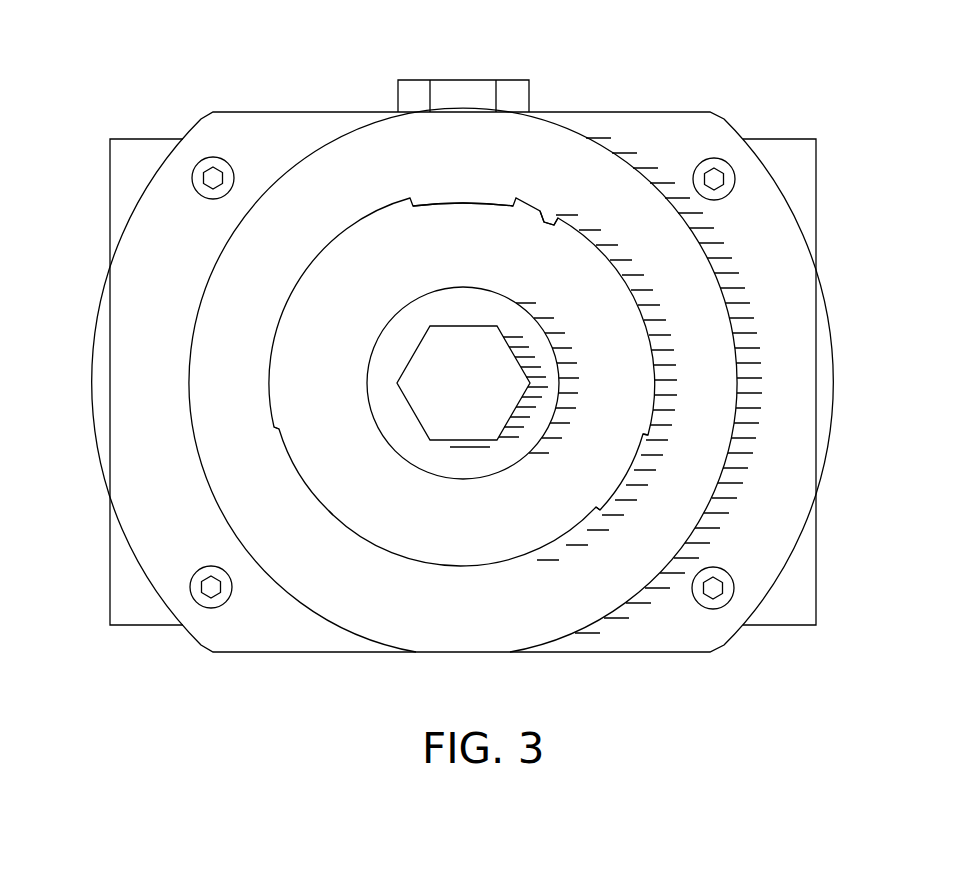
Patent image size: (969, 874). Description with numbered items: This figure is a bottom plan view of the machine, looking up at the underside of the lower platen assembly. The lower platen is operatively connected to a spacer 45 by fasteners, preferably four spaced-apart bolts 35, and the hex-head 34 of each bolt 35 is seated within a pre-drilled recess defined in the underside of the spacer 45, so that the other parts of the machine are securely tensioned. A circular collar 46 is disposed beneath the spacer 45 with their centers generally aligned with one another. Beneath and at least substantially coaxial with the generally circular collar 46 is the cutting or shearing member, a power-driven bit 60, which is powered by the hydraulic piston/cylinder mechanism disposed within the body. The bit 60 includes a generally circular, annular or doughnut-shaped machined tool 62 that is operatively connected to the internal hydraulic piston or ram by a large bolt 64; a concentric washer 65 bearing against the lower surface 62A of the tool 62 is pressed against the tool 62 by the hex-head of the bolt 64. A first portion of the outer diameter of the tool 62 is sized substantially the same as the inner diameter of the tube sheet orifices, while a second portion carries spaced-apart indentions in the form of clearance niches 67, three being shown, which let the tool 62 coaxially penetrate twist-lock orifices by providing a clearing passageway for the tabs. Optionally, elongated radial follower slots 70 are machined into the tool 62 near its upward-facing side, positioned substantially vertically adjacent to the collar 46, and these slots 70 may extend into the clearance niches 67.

The hex-head 34 is at (212, 158).
The bolt 35 is at (718, 160).
The spacer 45 is at (763, 207).
The circular collar 46 is at (702, 245).
The power-driven bit 60 is at (256, 392).
The machined tool 62 is at (573, 263).
The lower surface of the tool 62A is at (405, 240).
The large bolt 64 is at (435, 355).
The concentric washer 65 is at (388, 422).
The clearance niche 67 is at (488, 203).
The radial follower slot 70 is at (552, 218).